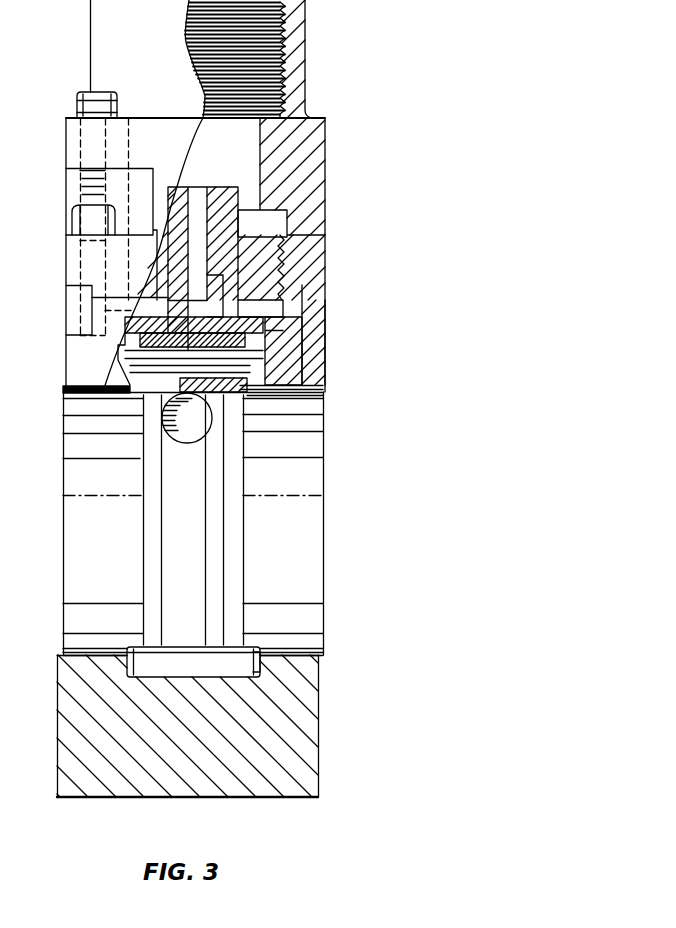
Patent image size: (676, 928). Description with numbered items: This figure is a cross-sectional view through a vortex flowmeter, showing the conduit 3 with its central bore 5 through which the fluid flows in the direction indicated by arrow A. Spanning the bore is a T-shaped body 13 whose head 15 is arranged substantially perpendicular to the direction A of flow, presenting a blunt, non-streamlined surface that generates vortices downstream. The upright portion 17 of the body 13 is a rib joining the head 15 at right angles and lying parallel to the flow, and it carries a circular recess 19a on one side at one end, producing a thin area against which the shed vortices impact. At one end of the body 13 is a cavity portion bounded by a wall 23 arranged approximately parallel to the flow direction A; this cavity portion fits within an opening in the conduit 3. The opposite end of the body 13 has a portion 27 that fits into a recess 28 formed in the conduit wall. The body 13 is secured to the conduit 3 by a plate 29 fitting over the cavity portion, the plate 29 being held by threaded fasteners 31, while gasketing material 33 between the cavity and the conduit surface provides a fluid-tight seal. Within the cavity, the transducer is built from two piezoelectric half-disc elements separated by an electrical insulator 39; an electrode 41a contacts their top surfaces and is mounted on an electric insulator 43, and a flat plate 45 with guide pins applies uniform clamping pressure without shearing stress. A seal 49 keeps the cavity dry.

The conduit 3 is at (80, 718).
The central bore 5 is at (75, 648).
The T-shaped body 13 is at (143, 578).
The head 15 is at (246, 523).
The upright portion 17 is at (160, 540).
The circular recess 19a is at (188, 444).
The wall 23 is at (247, 404).
The portion 27 is at (262, 672).
The recess 28 is at (130, 675).
The plate 29 is at (72, 136).
The threaded fastener 31 is at (78, 104).
The gasketing material 33 is at (325, 236).
The electrical insulator 39 is at (263, 373).
The electrode 41a is at (150, 356).
The electric insulator 43 is at (262, 340).
The flat plate 45 is at (240, 292).
The seal 49 is at (130, 300).
The direction of fluid flow A is at (283, 548).